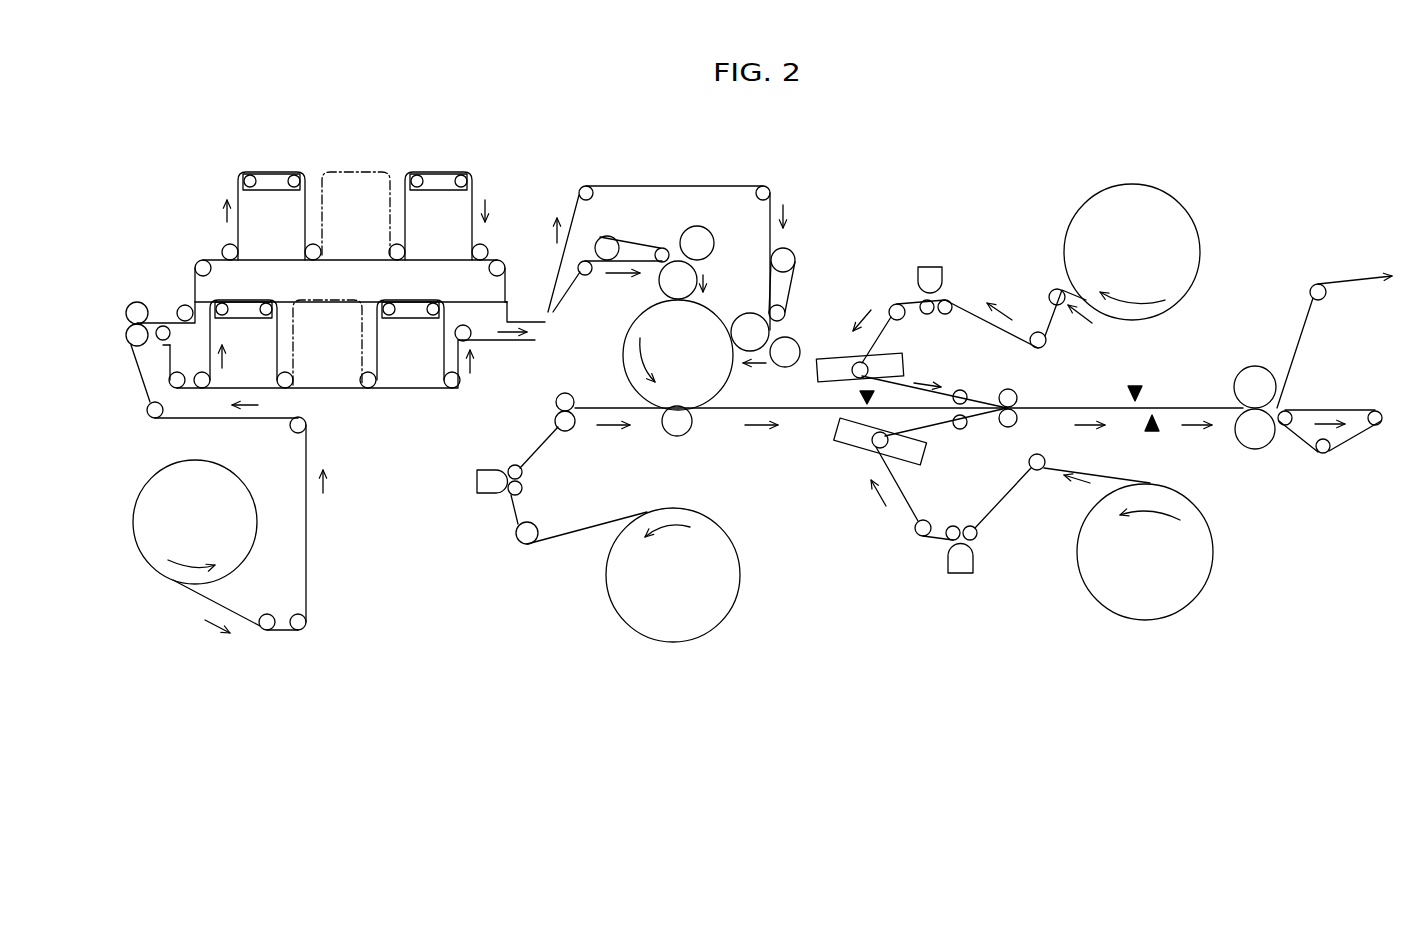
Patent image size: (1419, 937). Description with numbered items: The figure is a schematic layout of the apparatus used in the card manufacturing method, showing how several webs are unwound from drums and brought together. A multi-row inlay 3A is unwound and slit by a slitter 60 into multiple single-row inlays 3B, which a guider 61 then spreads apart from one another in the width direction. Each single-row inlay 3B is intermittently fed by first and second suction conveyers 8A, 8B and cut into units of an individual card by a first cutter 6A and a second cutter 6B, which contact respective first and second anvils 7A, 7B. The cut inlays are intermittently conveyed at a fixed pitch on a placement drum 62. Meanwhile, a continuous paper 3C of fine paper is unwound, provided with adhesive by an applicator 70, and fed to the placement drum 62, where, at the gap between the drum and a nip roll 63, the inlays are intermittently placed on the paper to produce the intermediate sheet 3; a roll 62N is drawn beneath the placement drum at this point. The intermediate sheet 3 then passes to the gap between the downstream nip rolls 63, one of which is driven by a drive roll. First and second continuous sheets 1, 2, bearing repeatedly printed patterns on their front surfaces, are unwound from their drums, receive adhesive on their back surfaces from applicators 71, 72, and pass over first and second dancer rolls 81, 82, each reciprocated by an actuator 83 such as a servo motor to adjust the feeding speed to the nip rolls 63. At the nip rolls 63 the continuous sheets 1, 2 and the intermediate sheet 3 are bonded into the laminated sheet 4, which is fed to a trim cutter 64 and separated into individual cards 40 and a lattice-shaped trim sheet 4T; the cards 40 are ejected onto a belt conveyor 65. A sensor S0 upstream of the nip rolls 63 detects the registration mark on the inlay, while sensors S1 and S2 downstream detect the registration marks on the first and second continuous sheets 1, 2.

The first continuous sheet 1 is at (1117, 183).
The second continuous sheet 2 is at (1123, 619).
The intermediate sheet 3 is at (810, 420).
The multi-row inlay 3A is at (183, 592).
The single-row inlay 3B is at (215, 257).
The continuous paper 3C is at (533, 440).
The laminated sheet 4 is at (1103, 406).
The trim sheet 4T is at (1347, 281).
The card 40 is at (1343, 408).
The slitter 60 is at (138, 302).
The guider 61 is at (270, 182).
The placement drum 62 is at (633, 351).
The nip roller 62N is at (681, 431).
The nip roll 63 is at (1017, 394).
The trim cutter 64 is at (1253, 377).
The belt conveyor 65 is at (1353, 439).
The first cutter 6A is at (704, 240).
The second cutter 6B is at (785, 362).
The first anvil 7A is at (665, 280).
The second anvil 7B is at (748, 325).
The first suction conveyer 8A is at (632, 253).
The second suction conveyer 8B is at (795, 305).
The applicator 70 is at (480, 486).
The applicator 71 is at (928, 267).
The applicator 72 is at (960, 571).
The first dancer roll 81 is at (900, 361).
The second dancer roll 82 is at (918, 461).
The actuator 83 is at (894, 404).
The sensor S0 is at (856, 397).
The sensor S1 is at (1135, 384).
The sensor S2 is at (1152, 432).